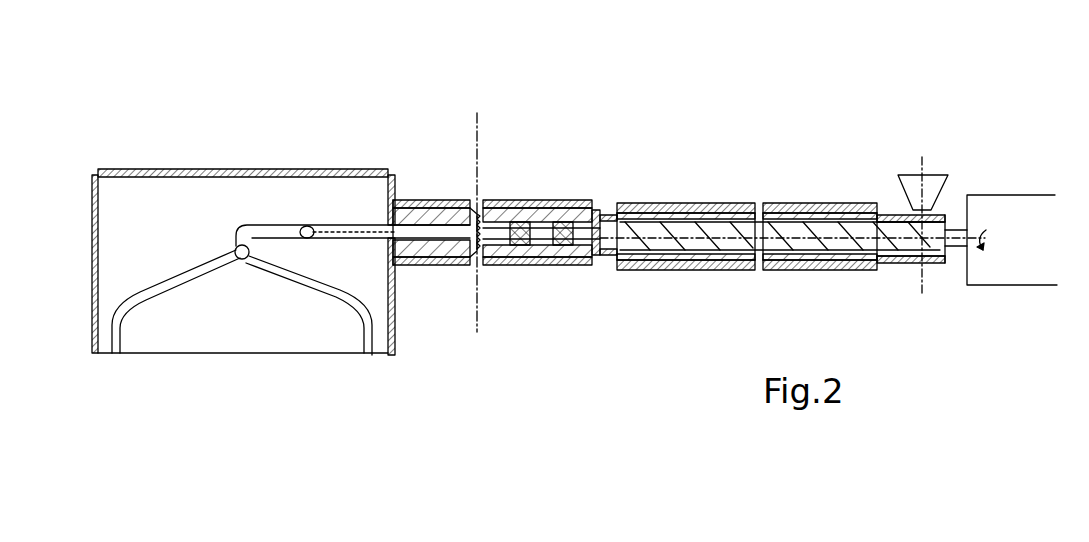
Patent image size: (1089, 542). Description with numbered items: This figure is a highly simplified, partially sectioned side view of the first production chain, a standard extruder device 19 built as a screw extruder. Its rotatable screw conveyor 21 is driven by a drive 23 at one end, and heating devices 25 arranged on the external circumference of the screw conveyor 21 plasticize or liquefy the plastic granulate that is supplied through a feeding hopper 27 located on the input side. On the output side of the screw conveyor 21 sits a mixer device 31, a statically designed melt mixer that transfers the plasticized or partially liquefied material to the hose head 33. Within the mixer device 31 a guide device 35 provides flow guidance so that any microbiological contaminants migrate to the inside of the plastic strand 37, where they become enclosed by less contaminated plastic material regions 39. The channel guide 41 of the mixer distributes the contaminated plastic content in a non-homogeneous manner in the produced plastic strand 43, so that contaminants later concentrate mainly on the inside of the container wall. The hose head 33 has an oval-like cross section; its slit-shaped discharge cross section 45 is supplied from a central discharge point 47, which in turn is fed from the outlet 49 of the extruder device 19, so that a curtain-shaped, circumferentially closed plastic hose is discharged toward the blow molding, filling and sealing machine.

The extruder device 19 is at (792, 230).
The screw conveyor 21 is at (908, 262).
The drive 23 is at (998, 212).
The heating devices 25 is at (665, 270).
The feeding hopper 27 is at (915, 185).
The mixer device 31 is at (575, 267).
The hose head 33 is at (195, 200).
The guide device 35 is at (507, 198).
The plastic strand 37 is at (438, 200).
The less contaminated plastic material regions 39 is at (412, 200).
The channel guide 41 is at (522, 267).
The plastic strand 43 is at (343, 232).
The discharge cross section 45 is at (365, 355).
The central discharge point 47 is at (237, 245).
The outlet 49 is at (398, 200).